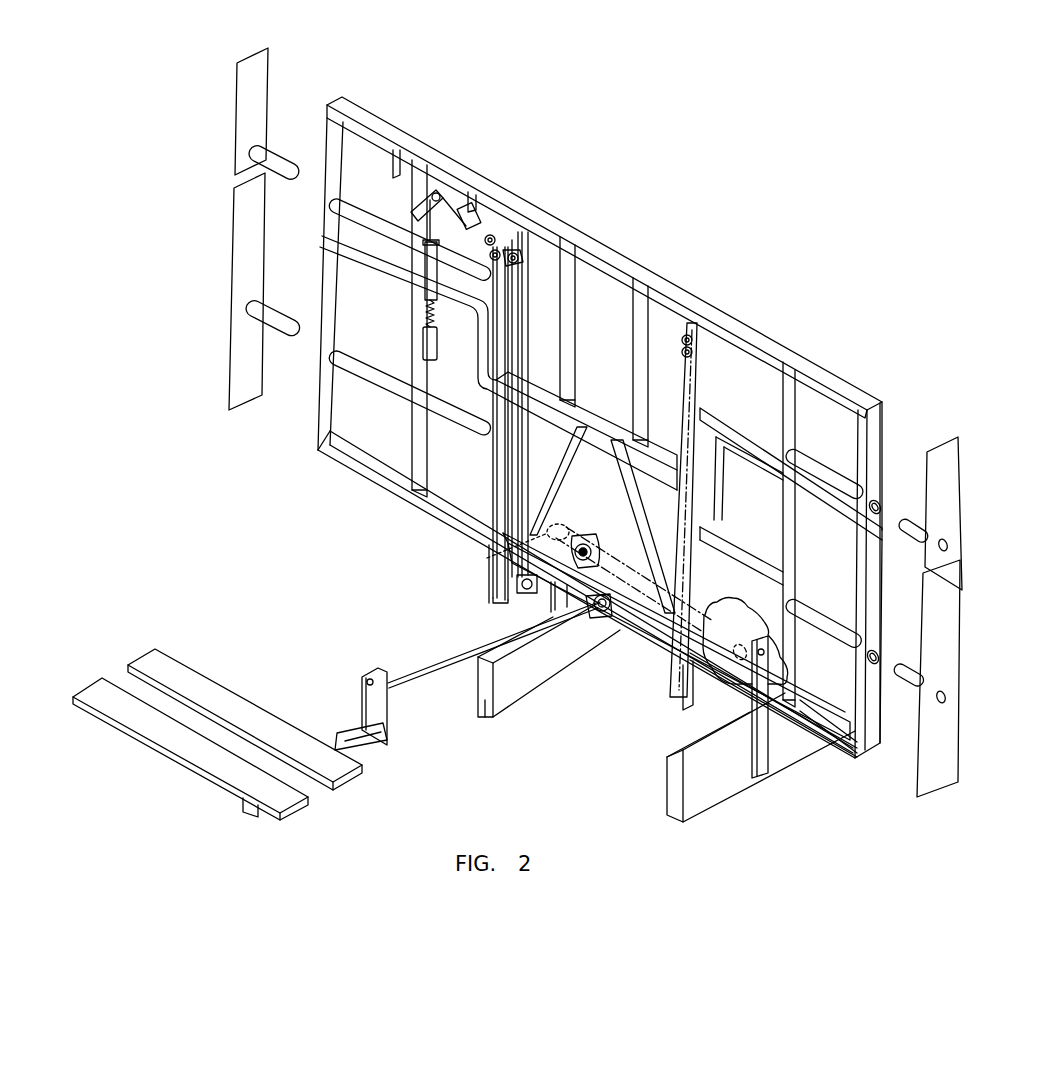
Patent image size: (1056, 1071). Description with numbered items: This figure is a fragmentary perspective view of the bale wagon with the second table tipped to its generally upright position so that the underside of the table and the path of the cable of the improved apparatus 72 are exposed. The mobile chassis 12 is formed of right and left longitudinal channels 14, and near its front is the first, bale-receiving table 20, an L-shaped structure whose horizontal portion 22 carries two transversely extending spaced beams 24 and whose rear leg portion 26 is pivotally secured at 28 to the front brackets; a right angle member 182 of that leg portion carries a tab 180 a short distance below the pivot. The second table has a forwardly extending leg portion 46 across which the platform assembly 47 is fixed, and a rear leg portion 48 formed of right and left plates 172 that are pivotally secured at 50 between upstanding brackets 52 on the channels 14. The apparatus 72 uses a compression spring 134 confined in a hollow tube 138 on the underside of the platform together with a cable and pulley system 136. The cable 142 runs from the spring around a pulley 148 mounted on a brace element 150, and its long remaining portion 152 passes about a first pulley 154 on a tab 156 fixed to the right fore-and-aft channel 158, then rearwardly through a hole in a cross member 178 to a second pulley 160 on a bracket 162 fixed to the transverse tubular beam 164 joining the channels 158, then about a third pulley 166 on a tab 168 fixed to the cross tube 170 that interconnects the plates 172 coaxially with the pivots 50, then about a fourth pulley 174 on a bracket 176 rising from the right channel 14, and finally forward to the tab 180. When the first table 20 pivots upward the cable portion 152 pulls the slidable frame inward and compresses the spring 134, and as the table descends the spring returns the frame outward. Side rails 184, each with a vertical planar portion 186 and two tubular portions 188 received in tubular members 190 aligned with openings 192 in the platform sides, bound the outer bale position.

The mobile chassis 12 is at (466, 640).
The longitudinal channels 14 is at (553, 682).
The first, bale-receiving table 20 is at (148, 646).
The horizontal portion 22 is at (346, 743).
The beams 24 is at (102, 678).
The rear leg portion 26 is at (389, 724).
The pivot 28 is at (370, 677).
The forwardly extending leg portion 46 is at (680, 424).
The platform assembly 47 is at (735, 372).
The rear leg portion 48 is at (484, 560).
The pivotal connections 50 is at (570, 530).
The upstanding brackets 52 is at (528, 627).
The apparatus 72 is at (380, 218).
The compression spring 134 is at (434, 326).
The cable and pulley system 136 is at (528, 484).
The hollow tube 138 is at (437, 358).
The cable 142 is at (522, 333).
The pulley 148 is at (438, 192).
The brace element 150 is at (418, 209).
The remaining portion of the cable 152 is at (516, 473).
The first pulley 154 is at (500, 247).
The tab 156 is at (522, 253).
The fore-and-aft extending channels 158 is at (508, 318).
The second pulley 160 is at (493, 599).
The bracket 162 is at (526, 593).
The transverse tubular beam 164 is at (637, 632).
The third pulley 166 is at (576, 537).
The tab 168 is at (587, 551).
The cross tube 170 is at (631, 580).
The plates 172 is at (488, 578).
The fourth pulley 174 is at (603, 614).
The bracket 176 is at (580, 613).
The cross member 178 is at (548, 404).
The tab 180 is at (389, 684).
The right angle member 182 is at (362, 697).
The side rails 184 is at (232, 316).
The planar portion 186 is at (234, 262).
The tubular portions 188 is at (284, 173).
The tubular members 190 is at (383, 242).
The openings 192 is at (880, 501).